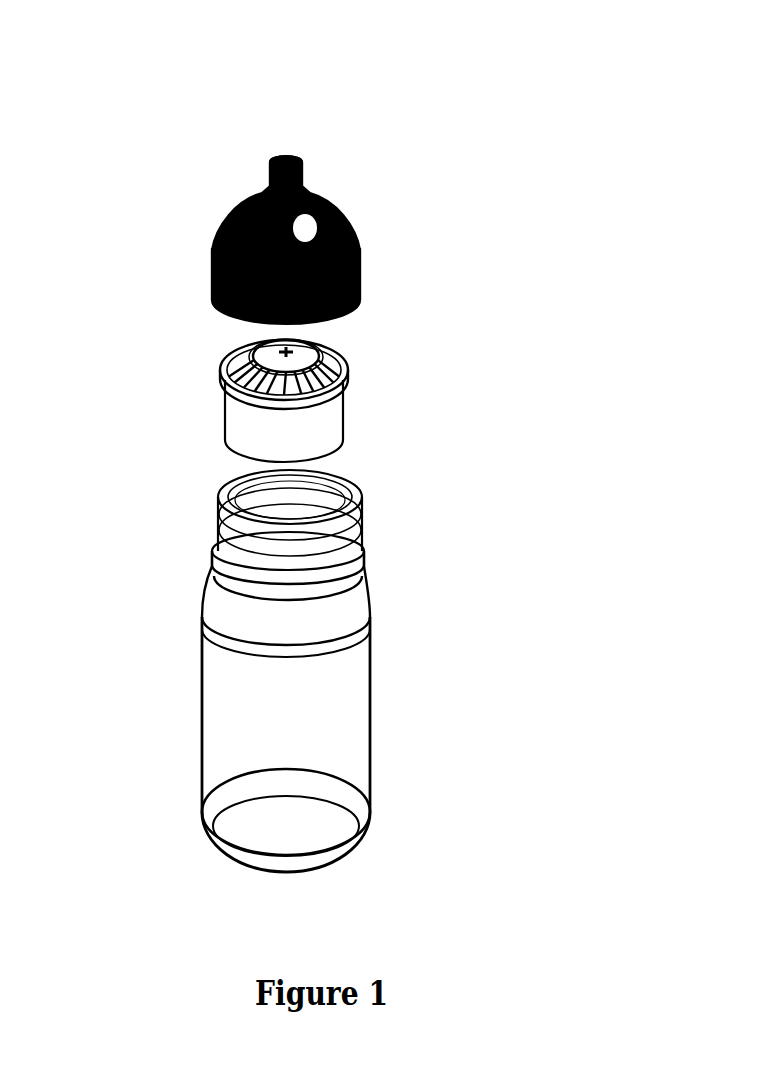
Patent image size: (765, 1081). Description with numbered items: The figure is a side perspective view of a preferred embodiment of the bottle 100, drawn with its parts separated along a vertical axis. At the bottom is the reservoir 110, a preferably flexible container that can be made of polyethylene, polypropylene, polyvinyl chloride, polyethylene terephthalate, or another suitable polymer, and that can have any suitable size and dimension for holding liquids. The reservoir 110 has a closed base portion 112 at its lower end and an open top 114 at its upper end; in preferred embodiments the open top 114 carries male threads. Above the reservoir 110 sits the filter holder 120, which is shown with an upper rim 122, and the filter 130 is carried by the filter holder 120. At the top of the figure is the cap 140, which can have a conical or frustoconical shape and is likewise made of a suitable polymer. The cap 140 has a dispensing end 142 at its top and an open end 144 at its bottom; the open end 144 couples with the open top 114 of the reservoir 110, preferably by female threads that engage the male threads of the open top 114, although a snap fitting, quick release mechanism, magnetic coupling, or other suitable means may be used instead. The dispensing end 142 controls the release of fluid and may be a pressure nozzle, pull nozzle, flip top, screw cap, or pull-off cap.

The bottle 100 is at (506, 223).
The reservoir 110 is at (337, 730).
The closed base portion 112 is at (290, 870).
The open top 114 is at (347, 500).
The filter holder 120 is at (338, 416).
The filter flange 122 is at (226, 369).
The filter 130 is at (343, 377).
The cap 140 is at (215, 270).
The dispensing end 142 is at (272, 163).
The open end 144 is at (338, 300).